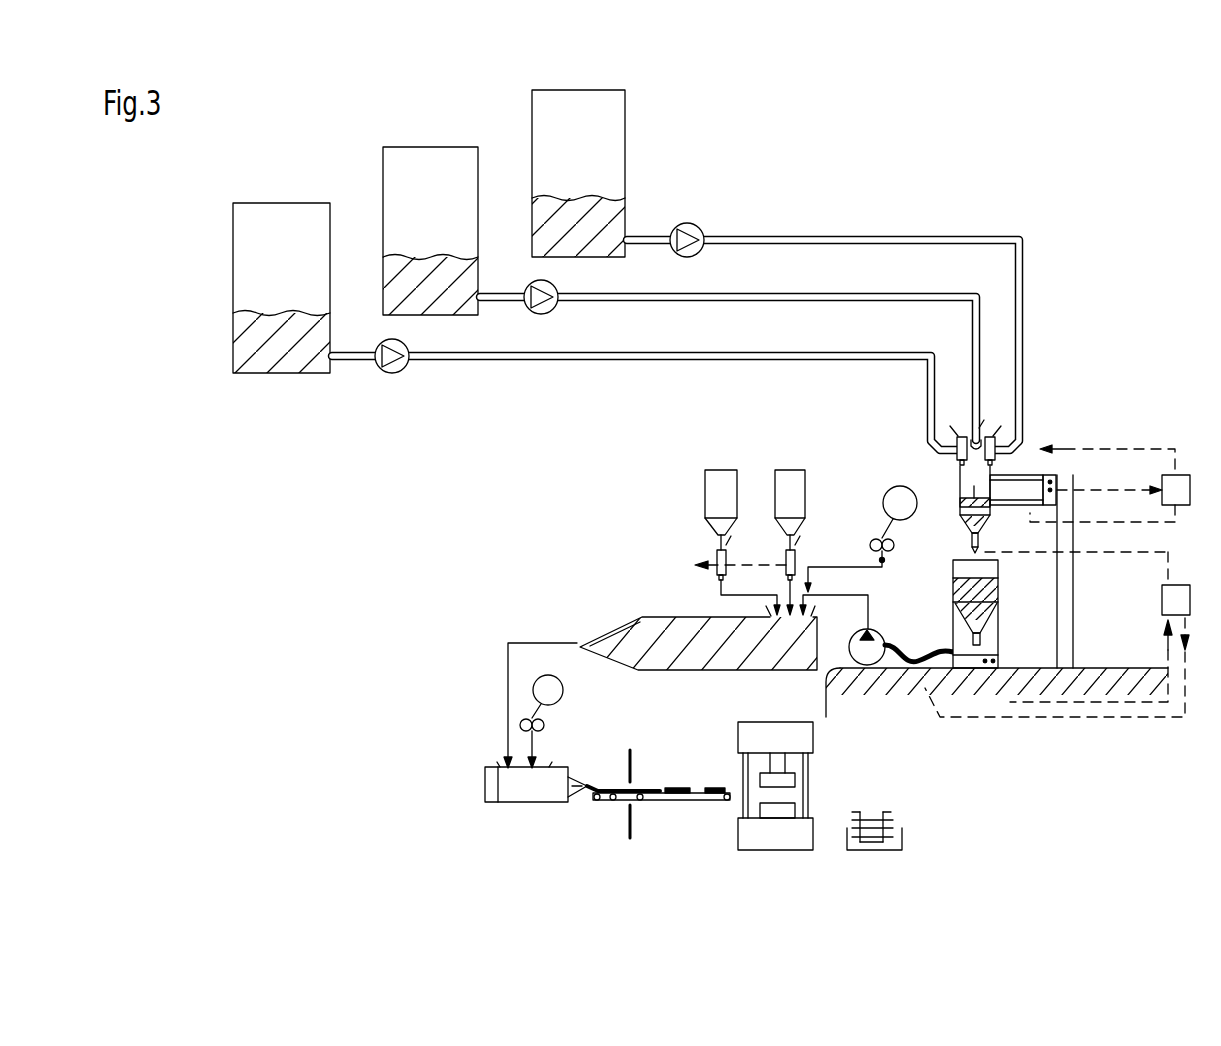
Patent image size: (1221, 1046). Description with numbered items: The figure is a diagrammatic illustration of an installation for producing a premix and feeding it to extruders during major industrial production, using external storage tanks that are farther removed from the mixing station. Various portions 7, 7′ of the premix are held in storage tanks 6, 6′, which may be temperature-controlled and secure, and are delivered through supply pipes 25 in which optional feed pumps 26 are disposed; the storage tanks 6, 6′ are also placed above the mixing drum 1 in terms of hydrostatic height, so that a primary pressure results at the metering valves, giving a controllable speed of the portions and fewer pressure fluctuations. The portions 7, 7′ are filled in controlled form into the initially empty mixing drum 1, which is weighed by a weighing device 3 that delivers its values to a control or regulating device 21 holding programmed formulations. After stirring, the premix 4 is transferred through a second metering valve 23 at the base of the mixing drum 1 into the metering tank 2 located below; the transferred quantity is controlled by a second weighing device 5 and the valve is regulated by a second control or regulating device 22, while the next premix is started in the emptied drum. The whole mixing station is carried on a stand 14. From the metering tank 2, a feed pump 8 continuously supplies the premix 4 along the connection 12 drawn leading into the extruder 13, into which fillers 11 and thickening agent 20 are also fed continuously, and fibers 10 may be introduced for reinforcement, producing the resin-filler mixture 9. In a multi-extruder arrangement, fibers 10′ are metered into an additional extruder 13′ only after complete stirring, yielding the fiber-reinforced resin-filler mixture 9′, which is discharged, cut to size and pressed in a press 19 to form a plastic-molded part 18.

The mixing drum 1 is at (958, 480).
The metering tank 2 is at (955, 583).
The weighing device 3 is at (1053, 477).
The premix 4 is at (993, 583).
The second weighing device 5 is at (998, 658).
The storage tank 6 is at (250, 260).
The storage tank 6′ is at (413, 170).
The portion 7 is at (248, 332).
The portion 7′ is at (423, 268).
The feed pump 8 is at (867, 660).
The resin-filler mixture 9 is at (508, 680).
The resin-filler mixture 9′ is at (607, 797).
The fibers 10 is at (876, 538).
The fibers 10′ is at (530, 740).
The fillers 11 is at (723, 480).
The feed line 12 is at (838, 597).
The extruder 13 is at (648, 618).
The additional extruder 13′ is at (516, 800).
The stand 14 is at (1073, 650).
The plastic-molded part 18 is at (885, 812).
The press 19 is at (750, 738).
The thickening agent 20 is at (790, 480).
The control or regulating device 21 is at (1112, 485).
The second control or regulating device 22 is at (913, 633).
The second metering valve 23 is at (980, 553).
The supply pipes 25 is at (887, 240).
The feed pumps 26 is at (392, 373).